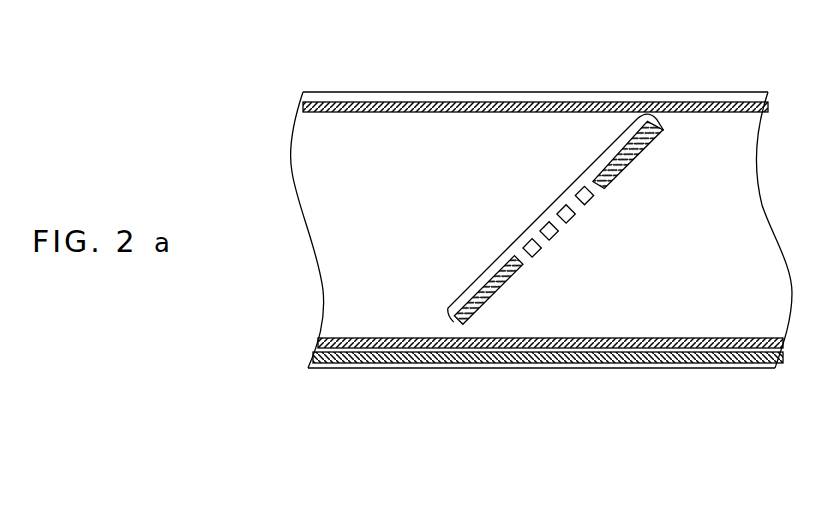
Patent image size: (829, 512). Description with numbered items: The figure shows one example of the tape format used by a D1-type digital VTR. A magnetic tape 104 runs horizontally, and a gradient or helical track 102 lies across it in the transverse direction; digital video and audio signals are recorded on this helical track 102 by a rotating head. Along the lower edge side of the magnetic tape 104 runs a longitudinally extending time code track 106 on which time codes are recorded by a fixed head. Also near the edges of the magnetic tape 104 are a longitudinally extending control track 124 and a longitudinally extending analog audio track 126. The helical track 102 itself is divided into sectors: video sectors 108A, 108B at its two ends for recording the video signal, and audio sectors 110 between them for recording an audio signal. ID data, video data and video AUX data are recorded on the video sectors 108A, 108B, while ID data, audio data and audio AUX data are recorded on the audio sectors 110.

The helical track 102 is at (542, 213).
The magnetic tape 104 is at (358, 179).
The time code track 106 is at (645, 367).
The video sector 108A is at (661, 126).
The video sector 108B is at (477, 316).
The audio sectors 110 is at (541, 256).
The control track 124 is at (572, 340).
The analog audio track 126 is at (399, 112).